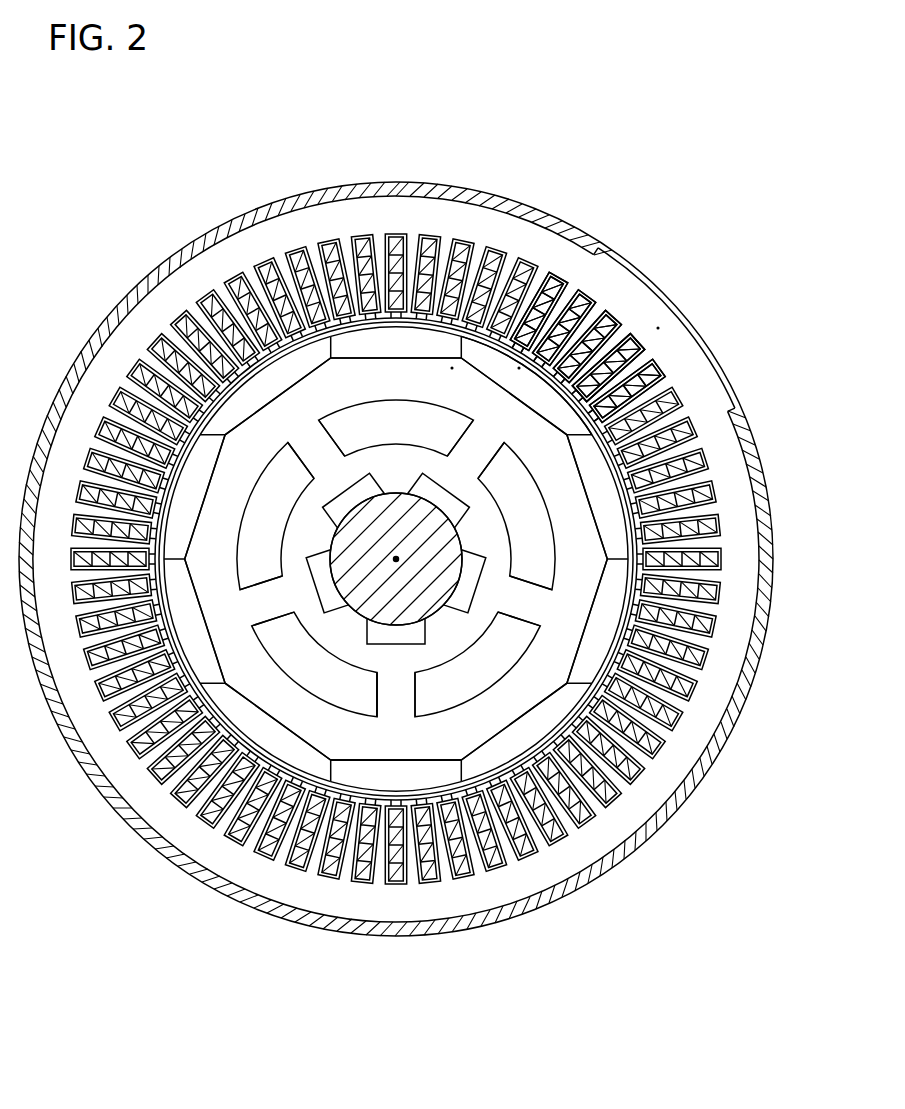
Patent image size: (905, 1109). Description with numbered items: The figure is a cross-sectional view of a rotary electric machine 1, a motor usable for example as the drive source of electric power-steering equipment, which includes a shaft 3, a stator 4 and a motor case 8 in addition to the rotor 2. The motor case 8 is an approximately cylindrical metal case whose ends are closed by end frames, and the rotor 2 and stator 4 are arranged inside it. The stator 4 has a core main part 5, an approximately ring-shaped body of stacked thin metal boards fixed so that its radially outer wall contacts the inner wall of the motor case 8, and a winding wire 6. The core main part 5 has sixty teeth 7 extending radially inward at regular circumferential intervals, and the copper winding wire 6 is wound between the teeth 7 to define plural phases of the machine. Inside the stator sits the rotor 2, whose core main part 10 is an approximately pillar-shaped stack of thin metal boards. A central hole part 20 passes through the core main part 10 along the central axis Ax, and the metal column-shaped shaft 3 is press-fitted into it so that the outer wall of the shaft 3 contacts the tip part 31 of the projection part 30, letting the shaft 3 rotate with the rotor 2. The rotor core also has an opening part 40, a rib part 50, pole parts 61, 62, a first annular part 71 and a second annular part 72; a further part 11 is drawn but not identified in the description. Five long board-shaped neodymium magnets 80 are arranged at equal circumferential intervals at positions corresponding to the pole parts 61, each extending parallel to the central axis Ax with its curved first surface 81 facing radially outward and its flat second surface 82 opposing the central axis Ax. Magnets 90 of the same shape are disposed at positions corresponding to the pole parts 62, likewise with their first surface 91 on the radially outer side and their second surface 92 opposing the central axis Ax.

The rotary electric machine 1 is at (488, 161).
The rotor 2 is at (482, 338).
The shaft 3 is at (443, 512).
The stator 4 is at (637, 283).
The core main part 5 is at (658, 328).
The winding wire 6 is at (645, 365).
The teeth 7 is at (571, 405).
The motor case 8 is at (707, 352).
The core main part 10 is at (452, 368).
The rotor core outer portion 11 is at (519, 368).
The central hole part 20 is at (433, 487).
The projection part 30 is at (408, 477).
The tip part 31 is at (380, 501).
The opening part 40 is at (370, 447).
The rib part 50 is at (462, 440).
The pole part 61 is at (406, 308).
The pole part 62 is at (570, 335).
The first annular part 71 is at (368, 662).
The second annular part 72 is at (350, 733).
The magnet 80 is at (379, 330).
The first surface 81 is at (446, 318).
The second surface 82 is at (420, 362).
The magnet 90 is at (542, 337).
The first surface 91 is at (598, 337).
The second surface 92 is at (302, 388).
The central axis Ax is at (396, 559).